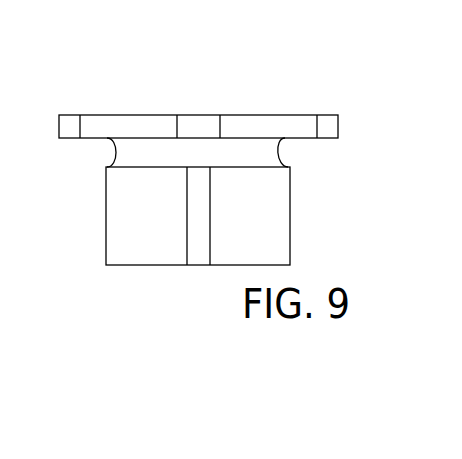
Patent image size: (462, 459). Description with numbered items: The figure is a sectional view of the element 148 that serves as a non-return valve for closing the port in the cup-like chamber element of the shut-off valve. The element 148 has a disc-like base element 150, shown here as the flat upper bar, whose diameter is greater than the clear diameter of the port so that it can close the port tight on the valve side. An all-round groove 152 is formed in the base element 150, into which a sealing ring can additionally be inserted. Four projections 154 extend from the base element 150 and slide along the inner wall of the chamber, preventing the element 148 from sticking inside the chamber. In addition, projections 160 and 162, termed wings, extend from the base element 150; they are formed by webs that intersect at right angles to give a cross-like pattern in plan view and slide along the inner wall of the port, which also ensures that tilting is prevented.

The element serving as a non-return valve 148 is at (353, 115).
The disc-like base element 150 is at (267, 127).
The all-round groove 152 is at (110, 153).
The projections 154 is at (73, 125).
The projection (wing) 160 is at (270, 245).
The projection (wing) 162 is at (205, 250).